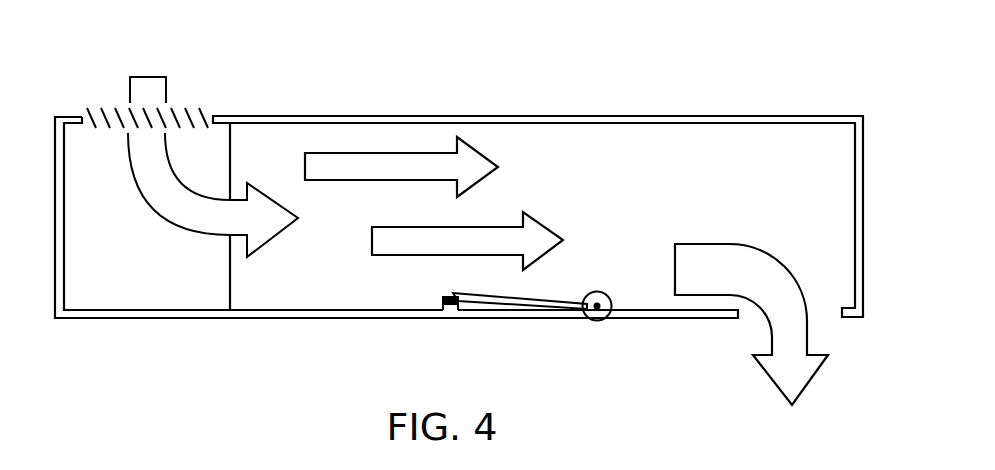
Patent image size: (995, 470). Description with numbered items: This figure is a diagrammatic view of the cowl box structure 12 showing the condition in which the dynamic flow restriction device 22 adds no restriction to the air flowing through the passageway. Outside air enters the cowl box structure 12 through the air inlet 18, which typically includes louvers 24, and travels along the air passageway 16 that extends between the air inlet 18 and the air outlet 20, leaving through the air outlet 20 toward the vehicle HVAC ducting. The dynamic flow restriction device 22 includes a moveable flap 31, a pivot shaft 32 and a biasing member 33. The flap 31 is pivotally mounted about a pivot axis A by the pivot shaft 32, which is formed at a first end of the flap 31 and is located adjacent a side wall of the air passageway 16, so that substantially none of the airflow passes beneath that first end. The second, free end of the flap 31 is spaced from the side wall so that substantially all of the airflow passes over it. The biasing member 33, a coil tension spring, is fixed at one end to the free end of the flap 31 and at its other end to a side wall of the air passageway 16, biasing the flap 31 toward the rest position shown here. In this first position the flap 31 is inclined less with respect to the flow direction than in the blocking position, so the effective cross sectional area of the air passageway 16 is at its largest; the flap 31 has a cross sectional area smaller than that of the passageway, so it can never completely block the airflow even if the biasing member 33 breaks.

The cowl box structure 12 is at (598, 54).
The air passageway 16 is at (640, 213).
The air inlet 18 is at (205, 117).
The air outlet 20 is at (740, 318).
The dynamic flow restriction device 22 is at (425, 292).
The louvers 24 is at (113, 126).
The moveable flap 31 is at (555, 298).
The pivot shaft 32 is at (612, 298).
The biasing member 33 is at (448, 300).
The pivot axis A is at (597, 310).